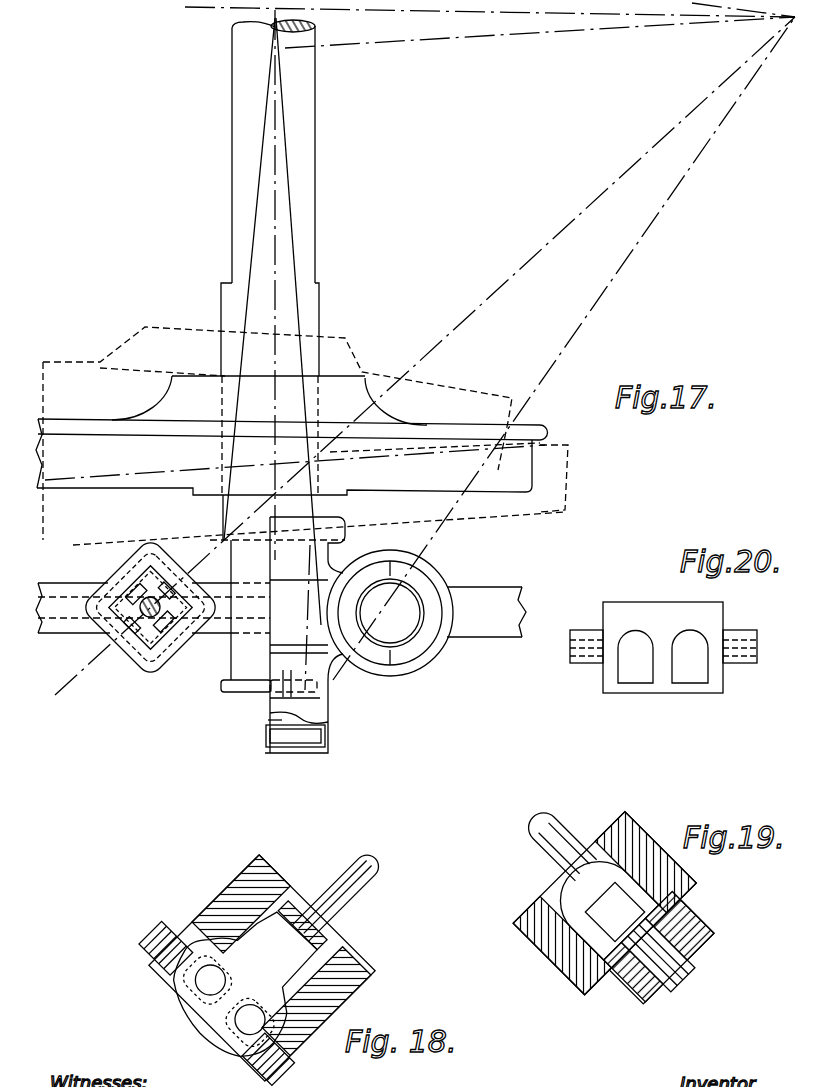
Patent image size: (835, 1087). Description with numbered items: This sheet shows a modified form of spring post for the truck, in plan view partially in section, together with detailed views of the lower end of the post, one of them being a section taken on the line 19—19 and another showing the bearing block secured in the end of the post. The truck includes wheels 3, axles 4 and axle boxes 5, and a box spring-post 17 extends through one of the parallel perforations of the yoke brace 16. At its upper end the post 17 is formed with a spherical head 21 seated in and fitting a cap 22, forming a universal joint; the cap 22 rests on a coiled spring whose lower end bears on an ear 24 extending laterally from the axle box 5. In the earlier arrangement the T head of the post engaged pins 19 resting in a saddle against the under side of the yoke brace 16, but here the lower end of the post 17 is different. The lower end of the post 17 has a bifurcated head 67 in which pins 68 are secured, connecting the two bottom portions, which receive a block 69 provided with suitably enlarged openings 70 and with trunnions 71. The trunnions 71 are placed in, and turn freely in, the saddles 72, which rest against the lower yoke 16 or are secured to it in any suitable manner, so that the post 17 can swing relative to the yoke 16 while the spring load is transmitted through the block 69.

In FIG. 17, the wheels 3 is at (522, 478).
In FIG. 17, the axles 4 is at (231, 240).
In FIG. 17, the axle boxes 5 is at (333, 728).
In FIG. 17, the yoke brace 16 is at (63, 620).
In FIG. 17, the box spring-post 17 is at (140, 640).
In FIG. 18, the box spring-post 17 is at (347, 870).
In FIG. 19, the box spring-post 17 is at (530, 848).
In FIG. 18, the pins 19 is at (350, 1013).
In FIG. 17, the spherical heads 21 is at (403, 602).
In FIG. 17, the caps 22 is at (420, 640).
In FIG. 17, the ears 24 is at (323, 624).
In FIG. 17, the bifurcated heads 67 is at (130, 633).
In FIG. 18, the bifurcated heads 67 is at (290, 915).
In FIG. 19, the bifurcated heads 67 is at (575, 897).
In FIG. 17, the pins 68 is at (150, 570).
In FIG. 18, the pins 68 is at (162, 1012).
In FIG. 19, the pins 68 is at (672, 930).
In FIG. 17, the block 69 is at (172, 647).
In FIG. 20, the block 69 is at (663, 647).
In FIG. 19, the block 69 is at (720, 990).
In FIG. 20, the enlarged openings 70 is at (663, 656).
In FIG. 20, the trunnions 71 is at (583, 668).
In FIG. 18, the trunnions 71 is at (165, 932).
In FIG. 17, the saddles 72 is at (175, 670).
In FIG. 18, the saddles 72 is at (200, 905).
In FIG. 19, the saddles 72 is at (556, 962).